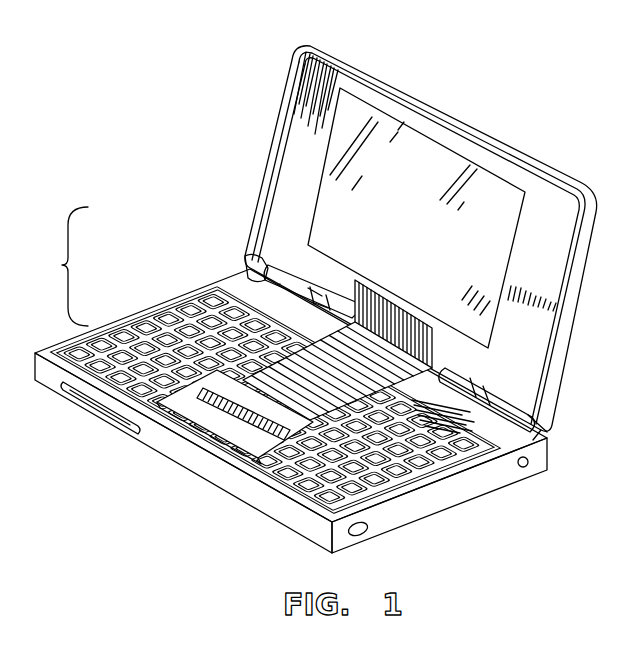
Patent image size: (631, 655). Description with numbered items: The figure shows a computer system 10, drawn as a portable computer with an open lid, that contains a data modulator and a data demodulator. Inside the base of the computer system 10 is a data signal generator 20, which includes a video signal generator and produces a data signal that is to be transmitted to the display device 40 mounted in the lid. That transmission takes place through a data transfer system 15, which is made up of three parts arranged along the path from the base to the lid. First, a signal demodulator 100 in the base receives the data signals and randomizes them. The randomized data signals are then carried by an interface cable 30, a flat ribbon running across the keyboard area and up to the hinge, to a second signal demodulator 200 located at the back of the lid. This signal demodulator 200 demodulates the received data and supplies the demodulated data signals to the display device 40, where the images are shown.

The computer system 10 is at (258, 79).
The data transfer system 15 is at (62, 265).
The data signal generator 20 is at (230, 432).
The interface cable 30 is at (300, 335).
The display device 40 is at (398, 130).
The signal demodulator 100 is at (205, 337).
The signal demodulator 200 is at (352, 280).